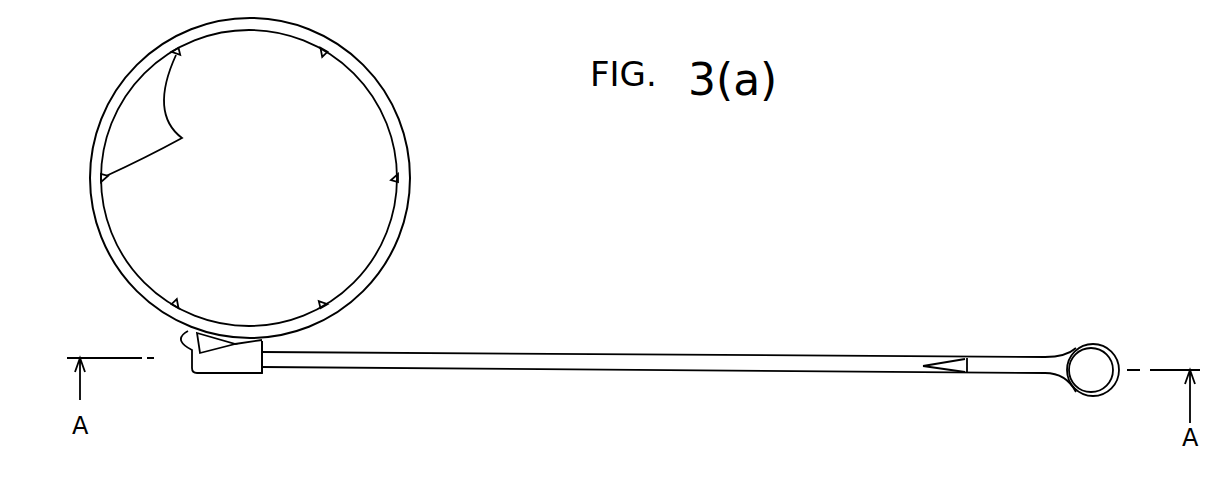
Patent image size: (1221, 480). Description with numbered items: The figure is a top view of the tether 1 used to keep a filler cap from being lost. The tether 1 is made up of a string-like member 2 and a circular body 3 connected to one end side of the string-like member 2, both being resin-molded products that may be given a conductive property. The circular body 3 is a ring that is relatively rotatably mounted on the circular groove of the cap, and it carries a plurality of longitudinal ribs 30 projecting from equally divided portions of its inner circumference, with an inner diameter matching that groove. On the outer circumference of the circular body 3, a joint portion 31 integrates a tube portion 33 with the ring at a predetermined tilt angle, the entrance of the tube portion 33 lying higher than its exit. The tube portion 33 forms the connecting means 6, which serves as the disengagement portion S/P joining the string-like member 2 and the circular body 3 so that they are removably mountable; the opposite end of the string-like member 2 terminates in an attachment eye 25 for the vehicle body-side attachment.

The tether 1 is at (537, 207).
The string-like member 2 is at (433, 350).
The circular body 3 is at (413, 198).
The connecting means 6 is at (258, 380).
The hanging loop 25 is at (1090, 355).
The longitudinal ribs 30 is at (182, 138).
The joint portion 31 is at (186, 332).
The tube portion 33 is at (208, 372).